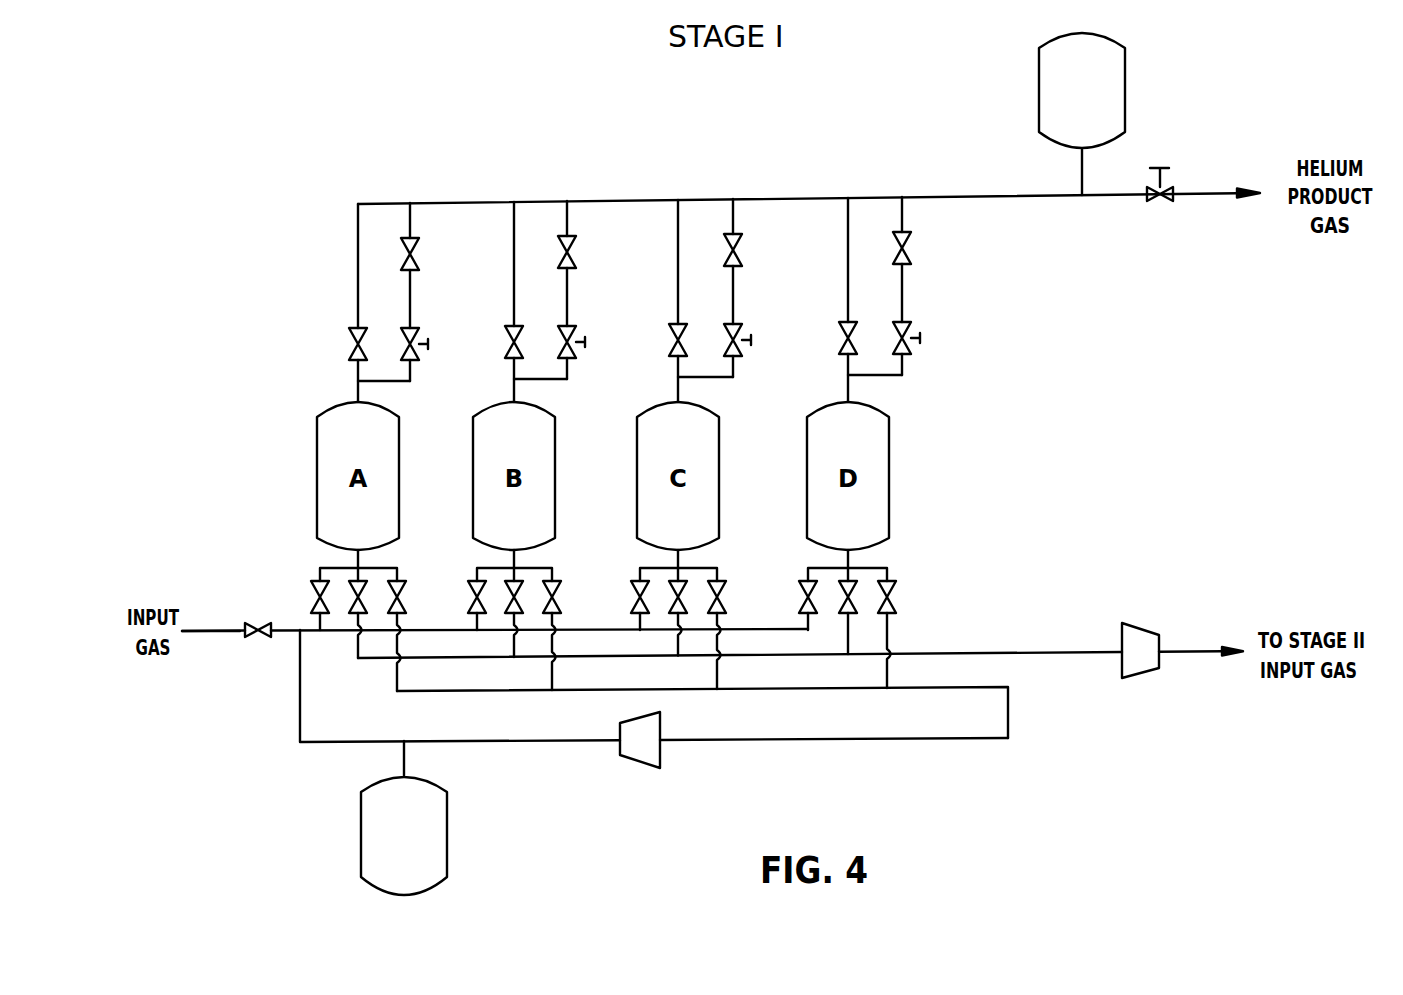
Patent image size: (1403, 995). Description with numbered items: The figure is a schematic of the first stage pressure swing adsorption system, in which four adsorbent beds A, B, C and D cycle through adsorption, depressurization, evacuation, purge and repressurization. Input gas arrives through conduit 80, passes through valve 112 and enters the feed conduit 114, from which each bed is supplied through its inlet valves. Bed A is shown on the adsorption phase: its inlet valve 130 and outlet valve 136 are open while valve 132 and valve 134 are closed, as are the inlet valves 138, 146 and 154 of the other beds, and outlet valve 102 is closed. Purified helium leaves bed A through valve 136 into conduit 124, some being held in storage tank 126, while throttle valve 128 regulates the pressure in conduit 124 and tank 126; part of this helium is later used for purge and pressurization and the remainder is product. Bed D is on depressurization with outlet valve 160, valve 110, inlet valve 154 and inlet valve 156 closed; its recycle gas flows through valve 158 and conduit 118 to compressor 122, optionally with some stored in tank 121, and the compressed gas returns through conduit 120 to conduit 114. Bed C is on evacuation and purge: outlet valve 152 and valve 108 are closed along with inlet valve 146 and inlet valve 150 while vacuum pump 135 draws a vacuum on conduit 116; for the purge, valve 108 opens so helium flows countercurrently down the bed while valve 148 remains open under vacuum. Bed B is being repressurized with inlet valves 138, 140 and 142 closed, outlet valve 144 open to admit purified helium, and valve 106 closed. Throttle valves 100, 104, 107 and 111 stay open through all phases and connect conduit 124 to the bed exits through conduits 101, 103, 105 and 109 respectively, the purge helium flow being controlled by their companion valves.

The conduit 80 is at (220, 633).
The throttle valve 100 is at (420, 351).
The conduit 101 is at (397, 382).
The valve 102 is at (421, 243).
The conduit 103 is at (557, 380).
The throttle valve 104 is at (578, 350).
The conduit 105 is at (720, 377).
The valve 106 is at (575, 242).
The throttle valve 107 is at (744, 348).
The valve 108 is at (740, 242).
The conduit 109 is at (883, 375).
The valve 110 is at (908, 242).
The throttle valve 111 is at (912, 346).
The valve 112 is at (268, 640).
The conduit 114 is at (287, 625).
The conduit 116 is at (1058, 649).
The conduit 118 is at (473, 692).
The conduit 120 is at (543, 743).
The tank 121 is at (373, 838).
The compressor 122 is at (638, 755).
The conduit 124 is at (743, 203).
The storage tank 126 is at (1112, 92).
The throttle valve 128 is at (1167, 202).
The inlet valve 130 is at (313, 590).
The valve 132 is at (353, 582).
The valve 134 is at (402, 590).
The vacuum pump 135 is at (1140, 672).
The outlet valve 136 is at (352, 333).
The inlet valve 138 is at (472, 608).
The inlet valve 140 is at (533, 590).
The inlet valve 142 is at (558, 607).
The outlet valve 144 is at (508, 330).
The inlet valve 146 is at (637, 592).
The valve 148 is at (687, 583).
The inlet valve 150 is at (723, 588).
The outlet valve 152 is at (672, 328).
The inlet valve 154 is at (803, 603).
The inlet valve 156 is at (860, 583).
The valve 158 is at (893, 603).
The outlet valve 160 is at (840, 327).